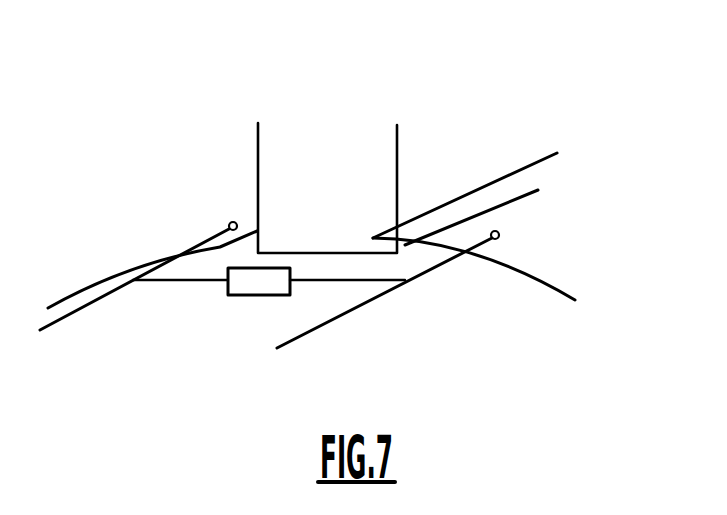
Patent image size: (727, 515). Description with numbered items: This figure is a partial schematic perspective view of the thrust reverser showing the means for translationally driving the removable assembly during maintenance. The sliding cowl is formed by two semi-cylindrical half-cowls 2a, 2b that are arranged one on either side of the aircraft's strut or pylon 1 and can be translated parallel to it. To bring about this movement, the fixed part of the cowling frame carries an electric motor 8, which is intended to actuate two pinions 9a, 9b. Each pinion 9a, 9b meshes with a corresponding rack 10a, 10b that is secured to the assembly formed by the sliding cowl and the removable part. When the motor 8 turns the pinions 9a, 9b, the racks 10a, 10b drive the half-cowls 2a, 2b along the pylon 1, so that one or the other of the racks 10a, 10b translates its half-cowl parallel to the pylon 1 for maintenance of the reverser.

The strut or pylon 1 is at (315, 153).
The semi-cylindrical half-cowl 2a is at (73, 292).
The semi-cylindrical half-cowl 2b is at (520, 265).
The electric motor 8 is at (253, 294).
The pinion 9a is at (163, 280).
The pinion 9b is at (365, 282).
The rack 10a is at (70, 312).
The rack 10b is at (330, 322).